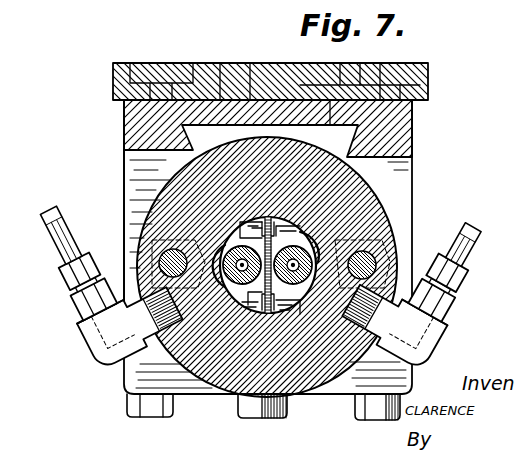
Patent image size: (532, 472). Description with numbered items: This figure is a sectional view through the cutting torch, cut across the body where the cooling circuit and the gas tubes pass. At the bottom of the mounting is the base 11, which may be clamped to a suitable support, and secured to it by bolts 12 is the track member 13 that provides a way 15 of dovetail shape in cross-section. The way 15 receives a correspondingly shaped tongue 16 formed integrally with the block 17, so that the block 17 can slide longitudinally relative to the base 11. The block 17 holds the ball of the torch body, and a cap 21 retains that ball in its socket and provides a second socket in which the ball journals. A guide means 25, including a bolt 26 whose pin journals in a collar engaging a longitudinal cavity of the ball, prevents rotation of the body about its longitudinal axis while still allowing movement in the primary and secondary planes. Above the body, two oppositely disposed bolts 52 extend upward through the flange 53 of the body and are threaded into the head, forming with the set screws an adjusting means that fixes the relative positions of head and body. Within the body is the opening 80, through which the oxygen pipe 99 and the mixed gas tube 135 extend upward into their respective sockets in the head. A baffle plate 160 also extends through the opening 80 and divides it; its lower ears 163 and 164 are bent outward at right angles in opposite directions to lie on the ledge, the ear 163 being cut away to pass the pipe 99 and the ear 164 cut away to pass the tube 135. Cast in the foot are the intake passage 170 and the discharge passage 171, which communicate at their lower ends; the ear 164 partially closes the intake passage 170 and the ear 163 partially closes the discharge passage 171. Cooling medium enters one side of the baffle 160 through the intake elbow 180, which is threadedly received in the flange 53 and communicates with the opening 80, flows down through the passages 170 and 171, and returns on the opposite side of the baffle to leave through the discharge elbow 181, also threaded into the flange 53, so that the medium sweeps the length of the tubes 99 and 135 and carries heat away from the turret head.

The base 11 is at (430, 92).
The bolts 12 is at (394, 70).
The track member 13 is at (418, 126).
The way 15 is at (357, 140).
The tongue 16 is at (255, 128).
The block 17 is at (123, 170).
The cap 21 is at (347, 400).
The guide means 25 is at (247, 423).
The bolt 26 is at (275, 420).
The bolts 52 is at (153, 258).
The flange 53 is at (330, 210).
The opening 80 is at (296, 222).
The oxygen pipe 99 is at (376, 258).
The mixed gas tube 135 is at (216, 240).
The baffle plate 160 is at (318, 240).
The ear 163 is at (305, 226).
The ear 164 is at (246, 302).
The intake passage 170 is at (281, 298).
The discharge passage 171 is at (243, 226).
The intake elbow 180 is at (428, 331).
The discharge elbow 181 is at (121, 333).